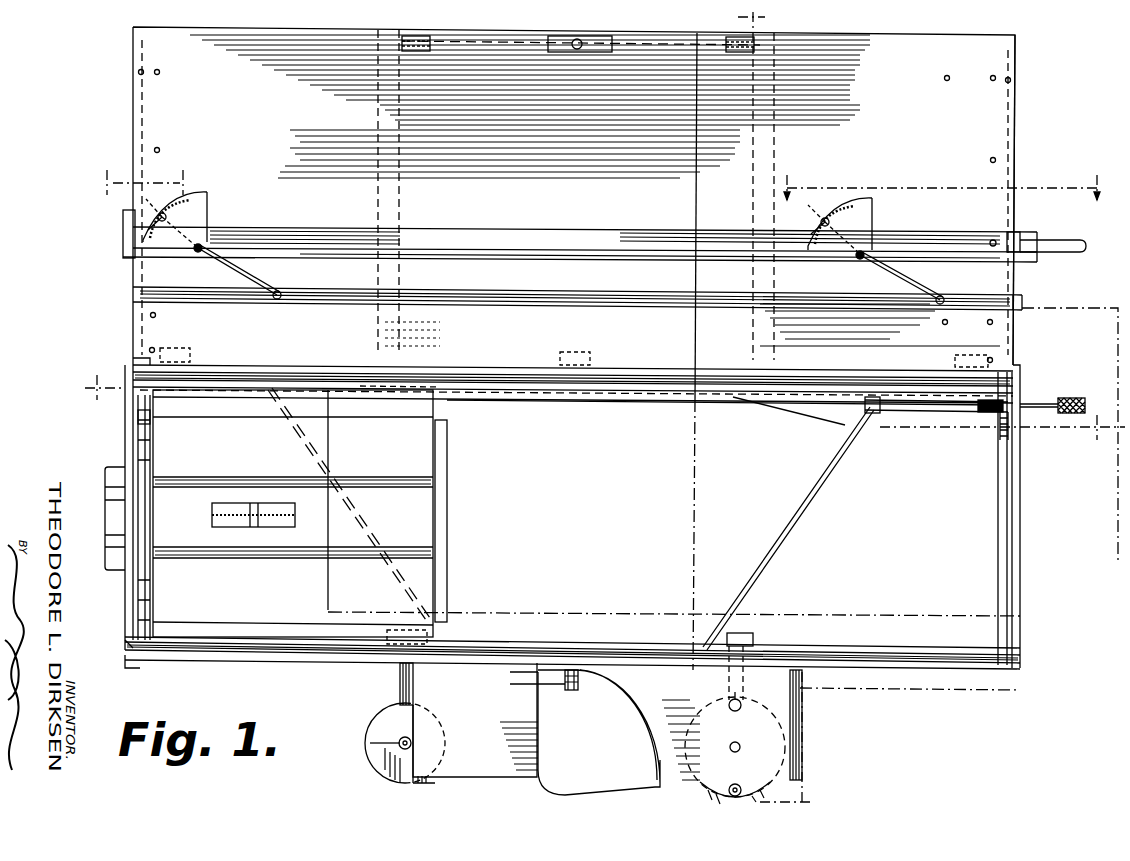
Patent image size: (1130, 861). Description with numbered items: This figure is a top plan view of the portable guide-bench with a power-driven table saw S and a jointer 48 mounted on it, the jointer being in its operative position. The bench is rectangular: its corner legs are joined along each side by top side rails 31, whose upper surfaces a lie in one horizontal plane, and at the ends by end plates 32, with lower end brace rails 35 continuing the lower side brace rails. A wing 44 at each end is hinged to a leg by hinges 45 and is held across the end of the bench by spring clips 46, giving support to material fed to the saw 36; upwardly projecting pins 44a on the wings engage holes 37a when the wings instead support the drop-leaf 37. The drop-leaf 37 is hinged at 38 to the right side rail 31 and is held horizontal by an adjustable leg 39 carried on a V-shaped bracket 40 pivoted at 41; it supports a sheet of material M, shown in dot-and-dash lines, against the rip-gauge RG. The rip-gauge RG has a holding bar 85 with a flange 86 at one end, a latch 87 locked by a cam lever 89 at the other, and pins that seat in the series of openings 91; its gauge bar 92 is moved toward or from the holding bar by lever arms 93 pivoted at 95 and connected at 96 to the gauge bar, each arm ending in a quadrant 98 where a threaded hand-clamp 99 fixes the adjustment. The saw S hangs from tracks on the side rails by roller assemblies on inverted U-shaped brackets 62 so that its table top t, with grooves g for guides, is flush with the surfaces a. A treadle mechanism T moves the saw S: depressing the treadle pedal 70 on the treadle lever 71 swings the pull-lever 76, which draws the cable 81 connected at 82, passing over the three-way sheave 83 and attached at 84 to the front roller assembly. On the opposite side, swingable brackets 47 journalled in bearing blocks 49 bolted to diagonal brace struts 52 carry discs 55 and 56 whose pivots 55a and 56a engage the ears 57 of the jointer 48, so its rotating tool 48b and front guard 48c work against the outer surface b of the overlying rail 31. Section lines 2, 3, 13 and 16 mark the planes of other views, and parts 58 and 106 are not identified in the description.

The section line 2- 2 is at (602, 408).
The section line 3- 3 is at (783, 409).
The section line 13- 13 is at (951, 179).
The section line 16- 16 is at (143, 182).
The top side rails 31 is at (851, 371).
The end plates 32 is at (1021, 566).
The lower end brace rails 35 is at (137, 431).
The saw 36 is at (270, 516).
The drop-leaf 37 is at (1018, 38).
The openings or holes 37a is at (138, 72).
The hinge 38 is at (192, 358).
The adjustable leg 39 is at (585, 53).
The V-shaped bracket 40 is at (495, 46).
The pivots 41 is at (416, 51).
The wing 44 is at (124, 456).
The upwardly projecting pins 44a is at (125, 661).
The hinges 45 is at (132, 362).
The spring clips 46 is at (124, 647).
The horizontally swingable brackets 47 is at (399, 681).
The jointer 48 is at (478, 768).
The rotating tool 48b is at (573, 692).
The front guard 48c is at (640, 712).
The bearing block 49 is at (428, 638).
The diagonal brace struts 52 is at (372, 527).
The disc or platform 55 is at (375, 720).
The pivot or spindle 55a is at (370, 743).
The disc or platform 56 is at (700, 793).
The pivot or spindle 56a is at (732, 747).
The lugs or ears 57 is at (395, 740).
The guide pulleys 58 is at (739, 710).
The inverted U-shaped bracket 62 is at (447, 408).
The treadle pedal 70 is at (1086, 404).
The treadle lever 71 is at (1040, 404).
The pull-lever 76 is at (965, 425).
The cable 81 is at (845, 425).
The cable connection 82 is at (876, 415).
The three-way sheave 83 is at (1005, 410).
The cable end connection 84 is at (372, 387).
The holding bar 85 is at (330, 245).
The inwardly extending flange 86 is at (122, 218).
The pivoted latch member 87 is at (1008, 235).
The cam lever 89 is at (1068, 238).
The openings 91 is at (160, 74).
The gauge bar 92 is at (515, 292).
The lever arms 93 is at (244, 272).
The pivot 95 is at (197, 252).
The pivotal connection 96 is at (279, 299).
The quadrant 98 is at (209, 208).
The threaded hand-clamp 99 is at (501, 214).
The stop pins 106 is at (944, 78).
The sheet of material M is at (1052, 308).
The rip-gauge RG is at (448, 309).
The power-driven table saw S is at (436, 518).
The treadle mechanism T is at (1079, 392).
The upper surfaces a is at (298, 390).
The outer surface b is at (305, 662).
The grooves g is at (392, 477).
The table top t is at (447, 440).